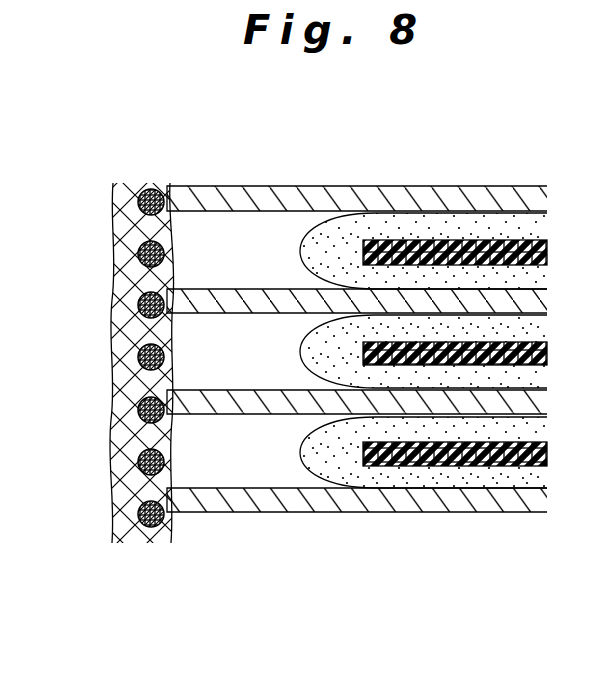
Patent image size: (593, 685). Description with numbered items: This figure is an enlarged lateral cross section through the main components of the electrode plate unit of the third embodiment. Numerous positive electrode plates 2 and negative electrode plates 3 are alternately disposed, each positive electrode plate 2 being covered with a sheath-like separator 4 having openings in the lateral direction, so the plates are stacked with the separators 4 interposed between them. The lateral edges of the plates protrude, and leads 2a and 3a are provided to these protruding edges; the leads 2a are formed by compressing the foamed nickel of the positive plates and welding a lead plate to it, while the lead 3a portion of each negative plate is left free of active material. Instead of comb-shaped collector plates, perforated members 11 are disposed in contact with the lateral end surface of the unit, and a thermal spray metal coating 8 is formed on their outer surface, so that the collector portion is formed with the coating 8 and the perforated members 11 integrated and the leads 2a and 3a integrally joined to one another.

The positive electrode plate 2 is at (357, 307).
The negative electrode plate 3 is at (508, 458).
The lead 2a is at (357, 307).
The lead 3a is at (229, 298).
The separator 4 is at (432, 478).
The thermal spray metal coating 8 is at (125, 465).
The perforated member 11 is at (138, 362).